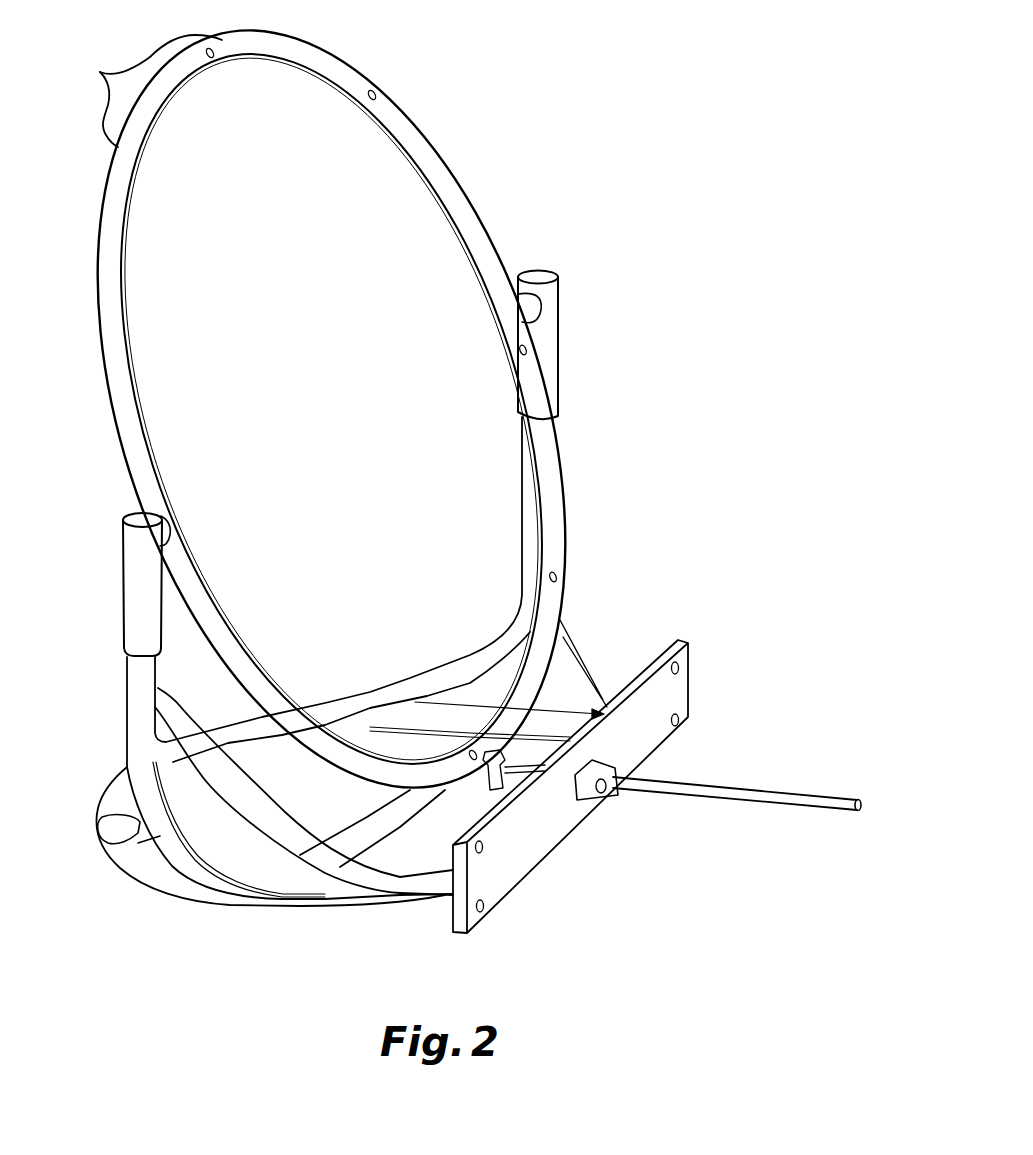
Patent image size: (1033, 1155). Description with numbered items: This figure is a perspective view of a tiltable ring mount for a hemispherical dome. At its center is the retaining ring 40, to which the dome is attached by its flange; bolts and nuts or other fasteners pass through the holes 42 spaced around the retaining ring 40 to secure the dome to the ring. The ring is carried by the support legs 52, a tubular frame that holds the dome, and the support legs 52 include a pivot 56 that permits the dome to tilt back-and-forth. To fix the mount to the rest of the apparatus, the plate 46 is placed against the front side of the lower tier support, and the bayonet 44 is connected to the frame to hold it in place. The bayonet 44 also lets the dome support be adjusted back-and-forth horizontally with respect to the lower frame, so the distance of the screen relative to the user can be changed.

The retaining ring 40 is at (450, 173).
The holes 42 is at (100, 72).
The bayonet 44 is at (710, 797).
The plate 46 is at (675, 693).
The support legs 52 is at (158, 833).
The pivot 56 is at (147, 510).